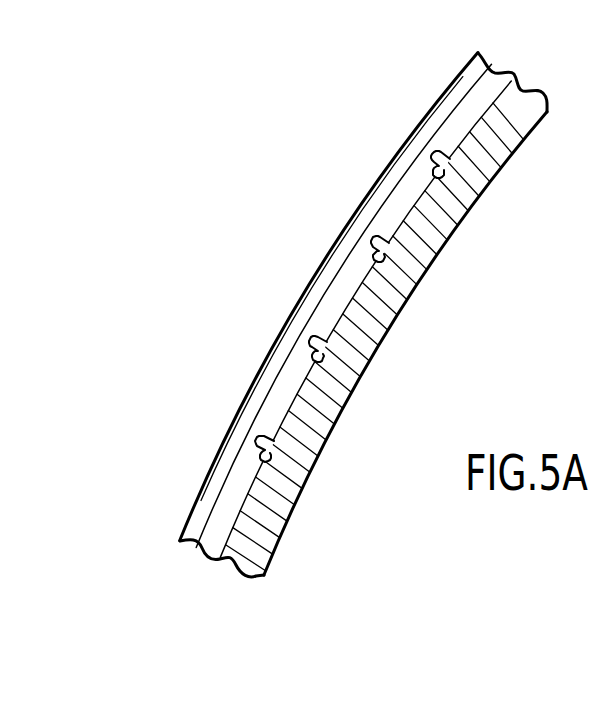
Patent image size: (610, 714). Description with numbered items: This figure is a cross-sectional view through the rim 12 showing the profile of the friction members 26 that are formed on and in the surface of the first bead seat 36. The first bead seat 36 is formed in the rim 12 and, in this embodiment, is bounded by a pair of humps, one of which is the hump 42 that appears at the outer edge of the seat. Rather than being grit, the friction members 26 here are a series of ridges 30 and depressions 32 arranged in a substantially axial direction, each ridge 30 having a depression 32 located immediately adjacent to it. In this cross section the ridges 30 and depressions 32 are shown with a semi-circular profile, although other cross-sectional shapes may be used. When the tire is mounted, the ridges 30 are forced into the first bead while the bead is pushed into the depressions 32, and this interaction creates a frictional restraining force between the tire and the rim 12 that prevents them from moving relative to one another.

The rim 12 is at (283, 503).
The friction members 26 is at (268, 450).
The ridges 30 is at (375, 247).
The depressions 32 is at (388, 271).
The first bead seat 36 is at (498, 149).
The hump 42 is at (440, 127).